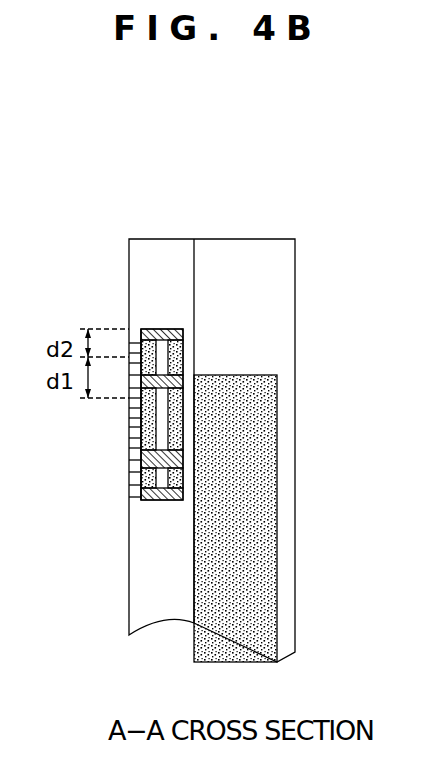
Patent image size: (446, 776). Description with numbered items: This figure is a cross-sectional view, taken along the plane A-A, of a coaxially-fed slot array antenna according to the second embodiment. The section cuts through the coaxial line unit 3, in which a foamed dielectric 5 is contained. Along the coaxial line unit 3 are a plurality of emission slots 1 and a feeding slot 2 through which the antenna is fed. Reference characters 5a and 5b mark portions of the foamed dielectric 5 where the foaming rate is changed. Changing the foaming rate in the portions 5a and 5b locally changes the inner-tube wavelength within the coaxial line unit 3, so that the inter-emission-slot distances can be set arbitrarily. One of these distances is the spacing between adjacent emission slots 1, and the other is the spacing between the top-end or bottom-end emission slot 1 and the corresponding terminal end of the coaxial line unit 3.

The emission slot 1 is at (137, 347).
The feeding slot 2 is at (162, 408).
The coaxial line unit 3 is at (183, 325).
The foamed dielectric 5 is at (217, 558).
The portion where the foaming rate of the foamed dielectric is changed 5a is at (184, 491).
The portion where the foaming rate of the foamed dielectric is changed 5b is at (183, 458).